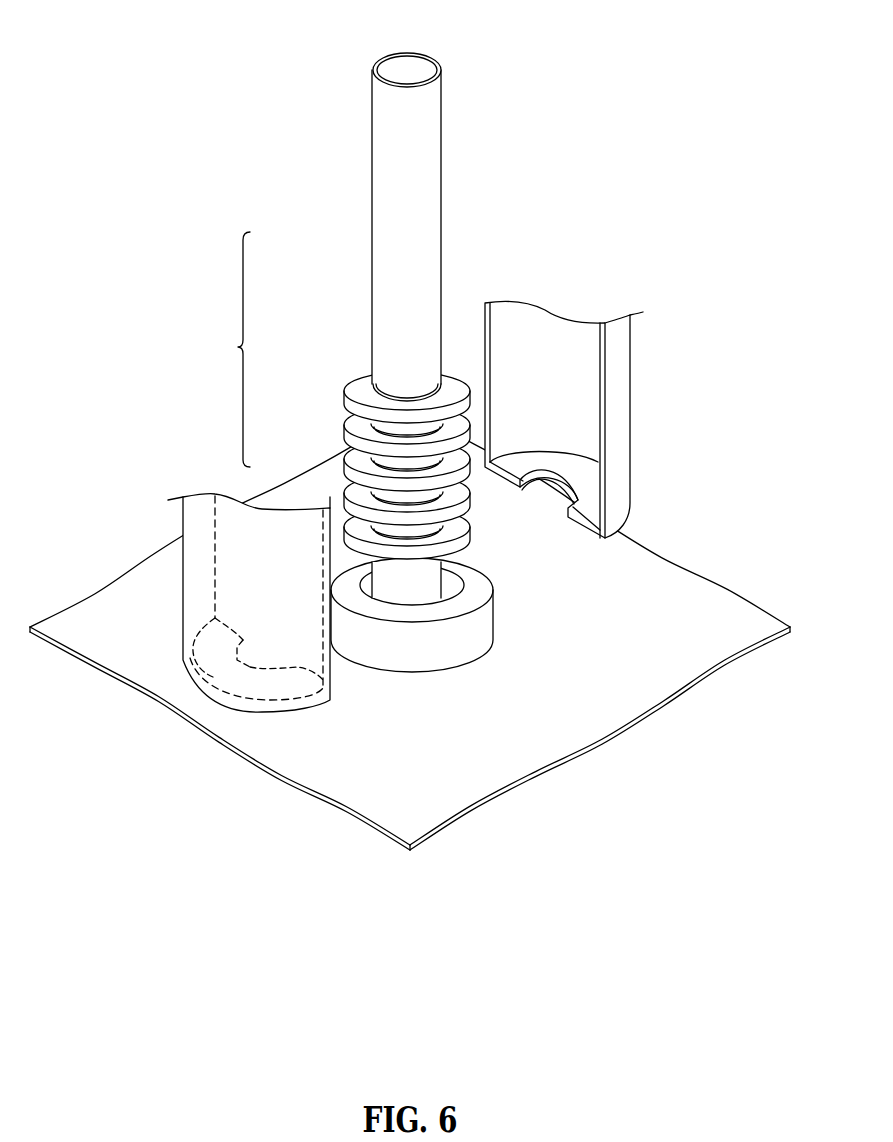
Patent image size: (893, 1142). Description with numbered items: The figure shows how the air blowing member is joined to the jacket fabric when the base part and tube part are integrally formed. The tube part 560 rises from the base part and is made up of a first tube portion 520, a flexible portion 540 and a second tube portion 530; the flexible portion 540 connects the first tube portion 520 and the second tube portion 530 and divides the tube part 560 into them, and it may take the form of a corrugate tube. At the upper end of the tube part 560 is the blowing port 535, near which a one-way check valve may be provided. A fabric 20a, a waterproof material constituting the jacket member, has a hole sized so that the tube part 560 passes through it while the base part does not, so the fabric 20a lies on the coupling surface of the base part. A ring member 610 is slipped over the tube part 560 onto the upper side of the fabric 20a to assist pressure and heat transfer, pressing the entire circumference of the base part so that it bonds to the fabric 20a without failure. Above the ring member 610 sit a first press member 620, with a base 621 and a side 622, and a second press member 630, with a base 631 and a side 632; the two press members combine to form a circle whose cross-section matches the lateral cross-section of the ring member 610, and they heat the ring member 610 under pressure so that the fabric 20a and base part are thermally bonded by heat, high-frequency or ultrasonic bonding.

The fabric 20a is at (692, 577).
The first tube portion 520 is at (333, 497).
The second tube portion 530 is at (348, 200).
The blowing port 535 is at (416, 71).
The flexible portion 540 is at (345, 397).
The tube part 560 is at (226, 349).
The ring member 610 is at (468, 632).
The first press member 620 is at (187, 616).
The base 621 is at (247, 677).
The side 622 is at (190, 628).
The second press member 630 is at (601, 419).
The base 631 is at (573, 468).
The side wall 632 is at (634, 417).